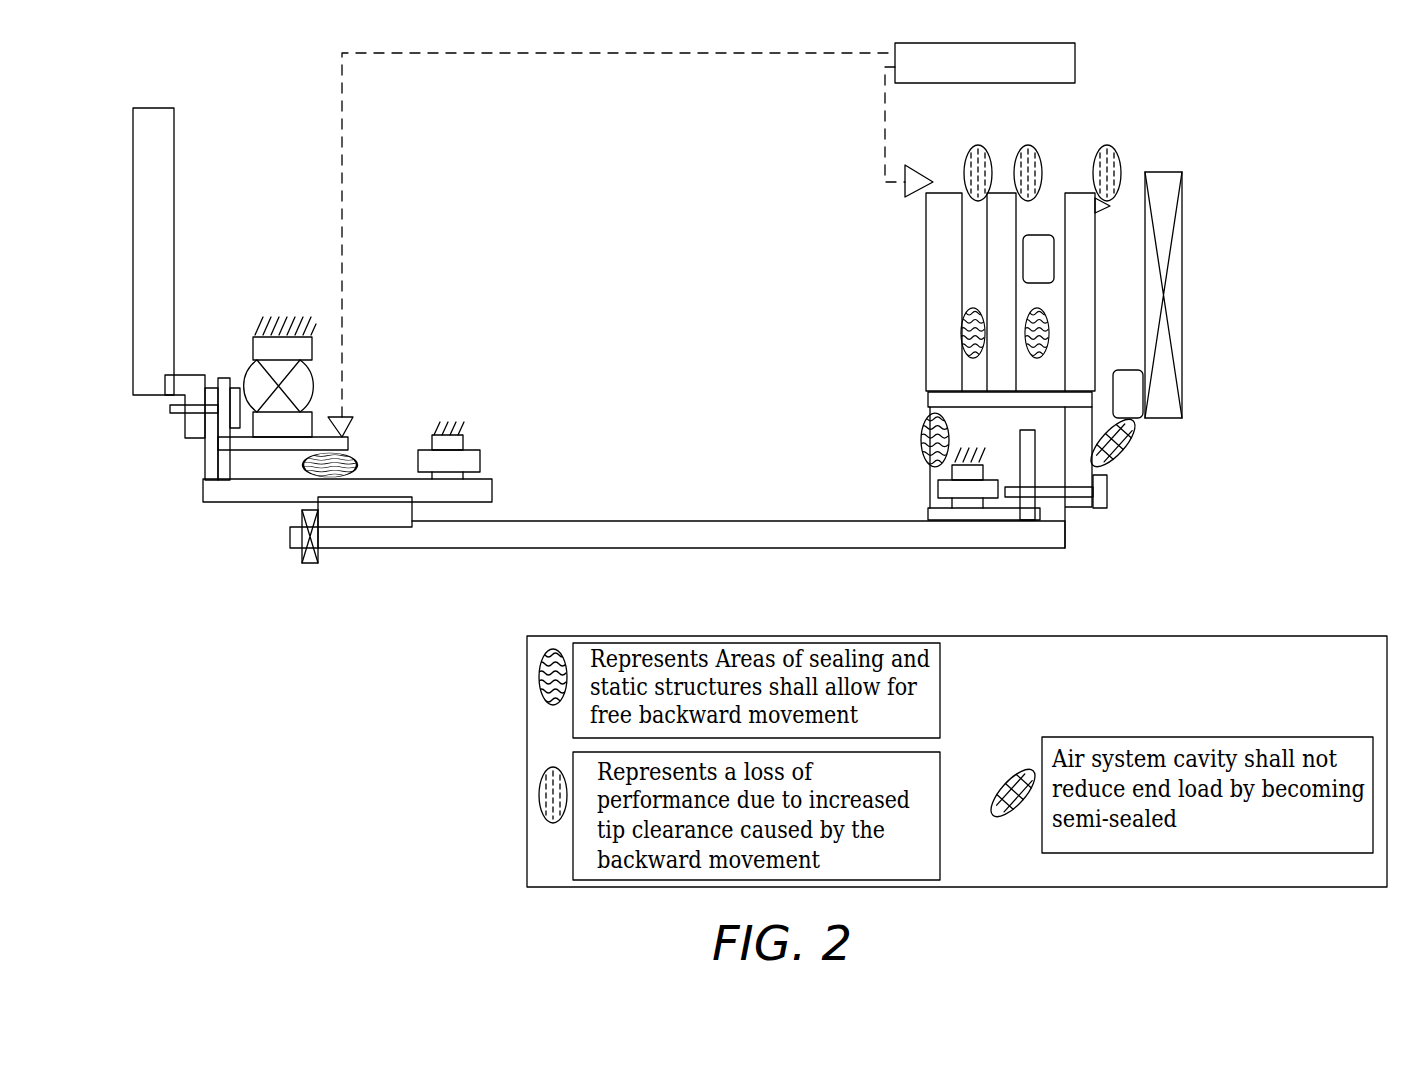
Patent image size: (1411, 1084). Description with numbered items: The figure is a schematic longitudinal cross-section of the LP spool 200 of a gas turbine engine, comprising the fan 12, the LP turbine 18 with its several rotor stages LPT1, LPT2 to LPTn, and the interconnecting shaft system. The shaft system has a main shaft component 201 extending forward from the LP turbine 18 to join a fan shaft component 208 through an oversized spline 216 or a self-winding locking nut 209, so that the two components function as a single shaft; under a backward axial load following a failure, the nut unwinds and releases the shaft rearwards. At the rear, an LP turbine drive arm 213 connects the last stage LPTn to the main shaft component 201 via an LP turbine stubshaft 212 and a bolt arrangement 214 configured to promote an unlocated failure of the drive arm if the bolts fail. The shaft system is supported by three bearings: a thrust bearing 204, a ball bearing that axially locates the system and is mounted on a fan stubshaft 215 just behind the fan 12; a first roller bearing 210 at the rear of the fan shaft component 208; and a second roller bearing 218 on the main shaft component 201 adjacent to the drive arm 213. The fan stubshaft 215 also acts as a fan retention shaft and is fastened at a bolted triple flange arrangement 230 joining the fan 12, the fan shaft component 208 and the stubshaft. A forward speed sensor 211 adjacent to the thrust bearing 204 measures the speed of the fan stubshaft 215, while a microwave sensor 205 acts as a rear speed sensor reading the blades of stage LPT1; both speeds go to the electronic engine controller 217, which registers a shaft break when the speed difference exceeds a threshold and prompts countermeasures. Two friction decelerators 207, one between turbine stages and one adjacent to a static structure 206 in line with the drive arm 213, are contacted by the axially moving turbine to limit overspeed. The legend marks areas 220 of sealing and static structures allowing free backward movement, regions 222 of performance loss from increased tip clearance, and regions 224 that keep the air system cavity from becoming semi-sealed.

The fan 12 is at (133, 140).
The LP turbine 18 is at (915, 243).
The LP spool 200 is at (570, 140).
The main shaft component 201 is at (778, 548).
The thrust bearing 204 is at (312, 343).
The microwave sensor 205 is at (908, 170).
The static structure 206 is at (1182, 283).
The friction decelerators 207 is at (1038, 235).
The fan shaft component 208 is at (223, 503).
The self-winding locking nut 209 is at (313, 563).
The first roller bearing 210 is at (472, 448).
The forward speed sensor 211 is at (350, 410).
The LP turbine stubshaft 212 is at (928, 508).
The LP turbine drive arm 213 is at (1070, 457).
The bolt arrangement 214 is at (1097, 512).
The fan stubshaft 215 is at (225, 378).
The oversized spline 216 is at (330, 527).
The electronic engine controller 217 is at (1003, 76).
The second roller bearing 218 is at (953, 468).
The areas of sealing and static structures 220 is at (540, 670).
The regions of performance loss 222 is at (540, 793).
The air system cavity regions 224 is at (1015, 770).
The triple flange arrangement 230 is at (155, 420).